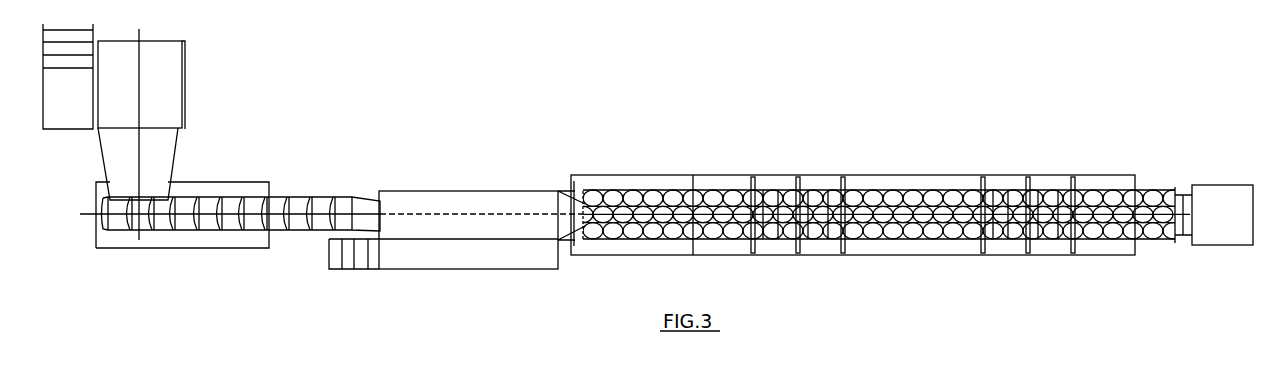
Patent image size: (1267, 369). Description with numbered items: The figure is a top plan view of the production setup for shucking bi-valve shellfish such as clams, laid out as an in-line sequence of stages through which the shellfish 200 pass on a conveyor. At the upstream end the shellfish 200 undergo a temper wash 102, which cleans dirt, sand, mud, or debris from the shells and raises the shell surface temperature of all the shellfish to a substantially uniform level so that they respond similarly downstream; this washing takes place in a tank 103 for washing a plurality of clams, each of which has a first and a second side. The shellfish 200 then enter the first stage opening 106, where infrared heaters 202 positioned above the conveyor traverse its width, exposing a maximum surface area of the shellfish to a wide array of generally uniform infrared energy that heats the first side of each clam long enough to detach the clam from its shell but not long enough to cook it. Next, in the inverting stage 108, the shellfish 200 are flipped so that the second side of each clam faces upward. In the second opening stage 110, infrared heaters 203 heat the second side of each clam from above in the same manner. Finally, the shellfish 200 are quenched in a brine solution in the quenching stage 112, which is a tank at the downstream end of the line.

The temper wash 102 is at (182, 215).
The tank 103 is at (230, 222).
The shellfish 200 is at (618, 188).
The first stage opening 106 is at (840, 146).
The inverting stage 108 is at (977, 146).
The second opening stage 110 is at (1073, 146).
The infrared heaters 202 is at (855, 271).
The infrared heaters 203 is at (1085, 271).
The quenching stage 112 is at (1222, 215).